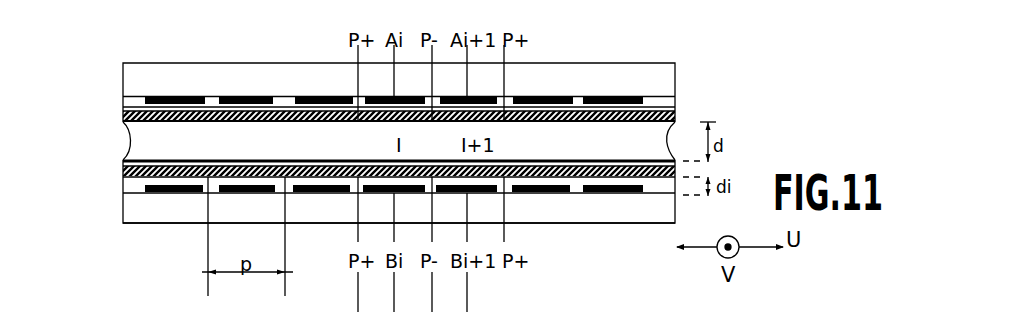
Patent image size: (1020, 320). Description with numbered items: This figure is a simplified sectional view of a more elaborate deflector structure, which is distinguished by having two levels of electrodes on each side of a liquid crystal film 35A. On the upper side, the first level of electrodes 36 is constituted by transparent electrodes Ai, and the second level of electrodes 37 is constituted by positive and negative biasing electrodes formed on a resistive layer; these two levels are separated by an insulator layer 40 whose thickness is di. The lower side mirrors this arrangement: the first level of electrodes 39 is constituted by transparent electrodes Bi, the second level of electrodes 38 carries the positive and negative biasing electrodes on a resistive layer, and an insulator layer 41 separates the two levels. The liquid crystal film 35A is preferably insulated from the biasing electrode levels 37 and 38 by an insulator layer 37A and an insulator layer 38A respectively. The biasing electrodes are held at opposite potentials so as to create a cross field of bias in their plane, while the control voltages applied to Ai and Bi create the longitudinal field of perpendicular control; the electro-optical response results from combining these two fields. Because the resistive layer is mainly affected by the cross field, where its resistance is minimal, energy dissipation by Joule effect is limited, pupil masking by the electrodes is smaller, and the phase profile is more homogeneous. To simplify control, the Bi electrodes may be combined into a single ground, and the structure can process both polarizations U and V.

The liquid crystal film 35A is at (667, 148).
The first level of electrodes 36 is at (130, 101).
The second level of electrodes 37 is at (123, 117).
The insulator layer 37A is at (124, 124).
The insulator layer 38A is at (123, 161).
The second level of electrodes 38 is at (123, 171).
The first level of electrodes 39 is at (123, 211).
The insulator layer 40 is at (170, 97).
The insulator layer 41 is at (165, 186).